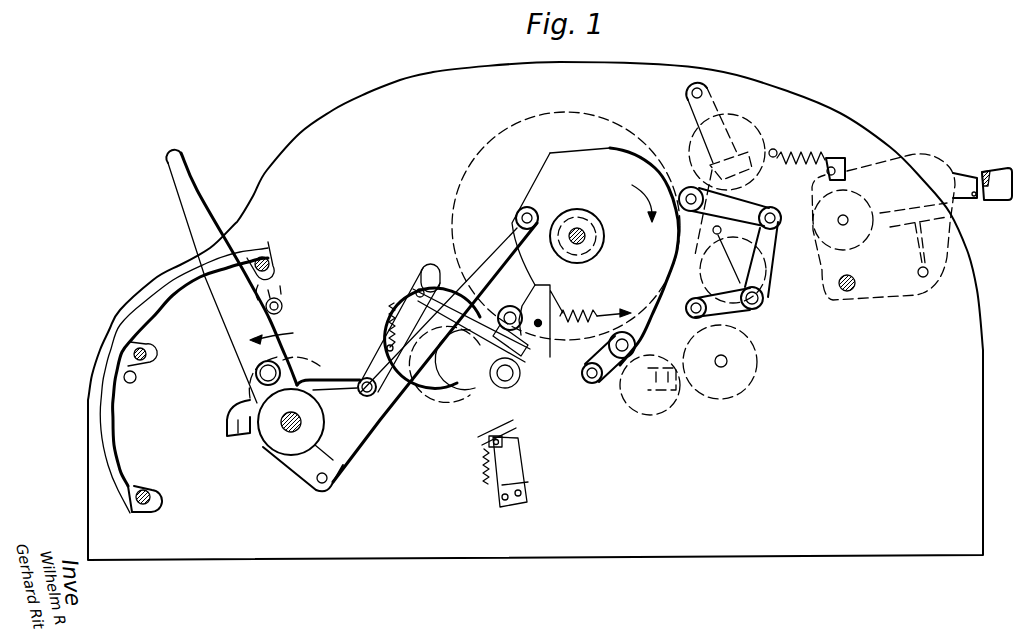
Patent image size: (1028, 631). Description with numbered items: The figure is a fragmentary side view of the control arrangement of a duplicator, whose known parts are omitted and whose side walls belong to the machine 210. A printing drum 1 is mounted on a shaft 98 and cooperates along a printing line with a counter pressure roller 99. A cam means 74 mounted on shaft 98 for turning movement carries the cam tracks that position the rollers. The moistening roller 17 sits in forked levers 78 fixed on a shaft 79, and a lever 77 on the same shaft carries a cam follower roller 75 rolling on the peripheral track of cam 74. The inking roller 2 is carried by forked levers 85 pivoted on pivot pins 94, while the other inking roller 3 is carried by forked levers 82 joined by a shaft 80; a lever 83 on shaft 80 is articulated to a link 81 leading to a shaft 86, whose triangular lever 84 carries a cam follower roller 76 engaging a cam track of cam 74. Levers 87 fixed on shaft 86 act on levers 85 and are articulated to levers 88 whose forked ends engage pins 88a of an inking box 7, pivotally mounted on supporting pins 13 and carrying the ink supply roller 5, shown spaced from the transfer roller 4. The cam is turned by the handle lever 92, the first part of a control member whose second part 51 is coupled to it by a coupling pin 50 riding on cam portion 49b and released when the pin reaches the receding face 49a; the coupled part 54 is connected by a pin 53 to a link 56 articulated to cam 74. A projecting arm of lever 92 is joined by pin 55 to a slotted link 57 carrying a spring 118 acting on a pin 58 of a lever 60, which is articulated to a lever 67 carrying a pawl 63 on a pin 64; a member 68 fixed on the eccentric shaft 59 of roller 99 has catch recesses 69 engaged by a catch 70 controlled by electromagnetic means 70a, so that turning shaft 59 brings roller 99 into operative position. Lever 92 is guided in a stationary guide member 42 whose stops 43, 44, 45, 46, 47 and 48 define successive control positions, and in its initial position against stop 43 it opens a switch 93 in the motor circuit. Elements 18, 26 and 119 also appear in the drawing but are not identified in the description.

The printing drum 1 is at (524, 124).
The inking roller 2 is at (755, 147).
The inking roller 3 is at (740, 320).
The transfer roller 4 is at (775, 260).
The ink supply roller 5 is at (870, 243).
The inking box 7 is at (930, 165).
The supporting pins 13 is at (854, 305).
The moistening roller 17 is at (677, 393).
The gear 18 is at (748, 363).
The lever 26 is at (845, 163).
The stationary guide member 42 is at (158, 300).
The stop 43 is at (232, 253).
The stop 44 is at (175, 288).
The stop 45 is at (135, 322).
The stop member 46 is at (127, 362).
The stop 47 is at (112, 402).
The stop 48 is at (120, 482).
The receding face portion 49a is at (238, 420).
The cam portion 49b is at (243, 388).
The coupling pin 50 is at (282, 372).
The second part of control member 51 is at (306, 470).
The pin 53 is at (322, 485).
The part 54 is at (285, 430).
The pin 55 is at (380, 403).
The link 56 is at (403, 377).
The link 57 is at (377, 362).
The pin 58 is at (430, 283).
The shaft 59 is at (517, 375).
The lever 60 is at (430, 265).
The pawl 63 is at (570, 312).
The pin 64 is at (555, 358).
The lever 67 is at (540, 385).
The member 68 is at (522, 415).
The catch recesses 69 is at (477, 435).
The catch 70 is at (484, 470).
The electromagnetic means 70a is at (508, 475).
The cam means 74 is at (542, 190).
The cam follower roller 75 is at (687, 293).
The cam follower roller 76 is at (680, 183).
The lever 77 is at (622, 387).
The forked levers 78 is at (665, 412).
The shaft 79 is at (593, 383).
The shaft 80 is at (698, 316).
The link 81 is at (765, 295).
The forked levers 82 is at (735, 285).
The lever 83 is at (753, 322).
The triangular lever 84 is at (668, 318).
The forked levers 85 is at (712, 113).
The shaft 86 is at (707, 237).
The levers 87 is at (705, 170).
The levers 88 is at (822, 158).
The pins 88a is at (887, 157).
The handle lever 92 is at (178, 166).
The switch 93 is at (282, 306).
The pivot pins 94 is at (697, 87).
The shaft 98 is at (579, 226).
The counter pressure roller 99 is at (472, 393).
The spring 118 is at (418, 303).
The arrow direction 119 is at (595, 313).
The machine 210 is at (968, 507).